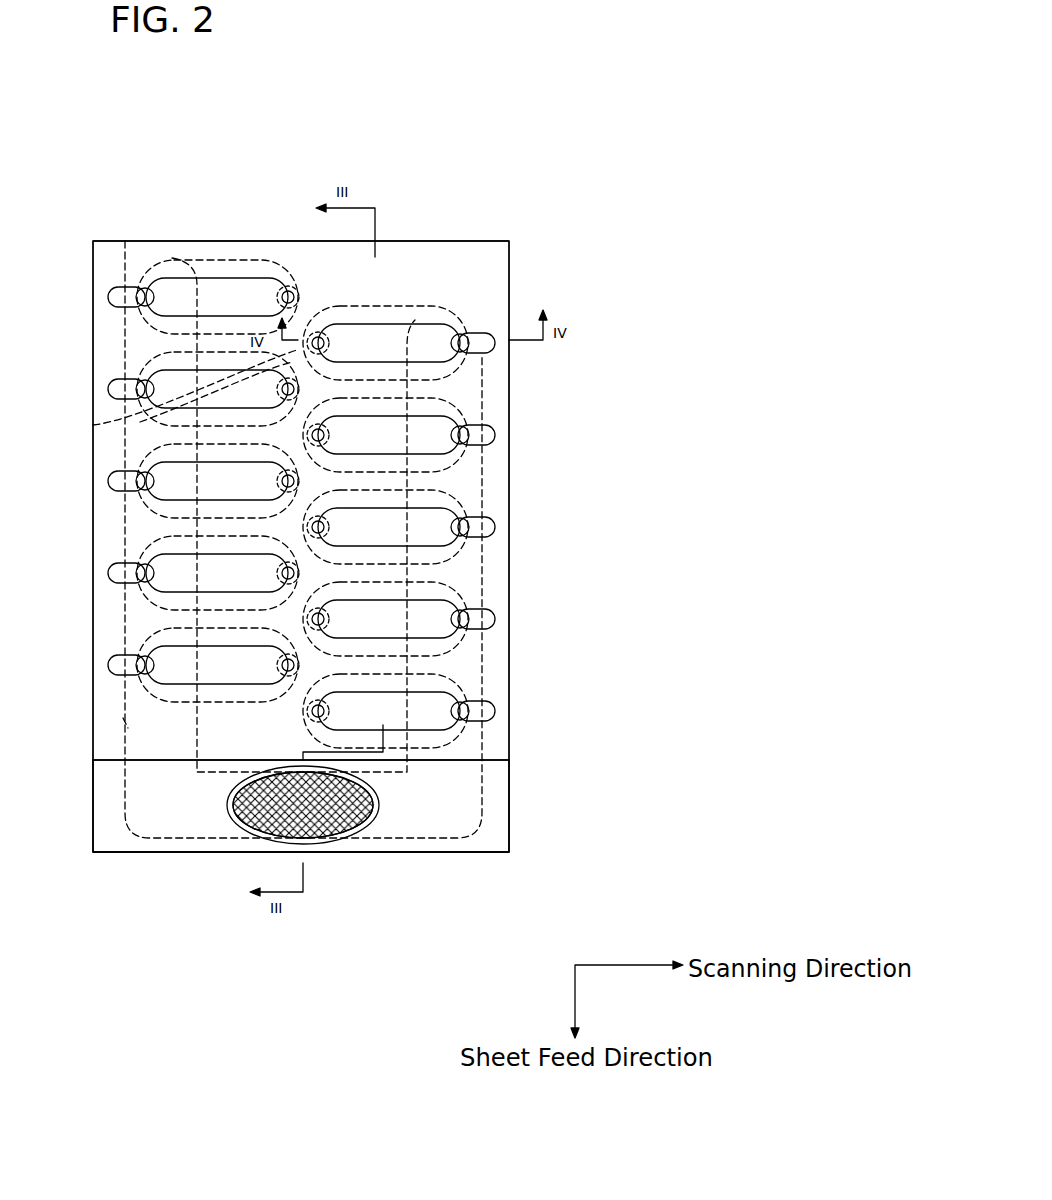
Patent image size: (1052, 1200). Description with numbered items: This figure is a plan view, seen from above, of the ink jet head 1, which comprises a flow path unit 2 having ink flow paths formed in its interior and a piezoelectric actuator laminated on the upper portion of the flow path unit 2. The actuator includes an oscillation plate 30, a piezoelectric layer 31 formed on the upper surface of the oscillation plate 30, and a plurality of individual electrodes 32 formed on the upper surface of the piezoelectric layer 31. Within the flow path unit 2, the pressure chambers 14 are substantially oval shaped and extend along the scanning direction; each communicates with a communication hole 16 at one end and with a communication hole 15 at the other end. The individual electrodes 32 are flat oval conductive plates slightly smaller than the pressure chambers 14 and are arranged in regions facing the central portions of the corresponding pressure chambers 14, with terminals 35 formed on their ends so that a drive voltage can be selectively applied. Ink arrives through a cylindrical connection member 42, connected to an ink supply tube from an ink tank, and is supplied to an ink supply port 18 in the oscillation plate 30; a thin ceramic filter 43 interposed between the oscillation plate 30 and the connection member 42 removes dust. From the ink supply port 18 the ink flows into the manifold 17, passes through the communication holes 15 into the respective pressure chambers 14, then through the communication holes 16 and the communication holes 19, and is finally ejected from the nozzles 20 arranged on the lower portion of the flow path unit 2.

The ink jet head 1 is at (411, 192).
The flow path unit 2 is at (514, 413).
The pressure chamber 14 is at (165, 258).
The communication hole 15 is at (112, 297).
The communication hole 16 is at (240, 258).
The manifold 17 is at (110, 743).
The ink supply port 18 is at (353, 828).
The communication hole 19 is at (80, 425).
The nozzle 20 is at (307, 322).
The oscillation plate 30 is at (497, 800).
The piezoelectric layer 31 is at (497, 745).
The individual electrode 32 is at (205, 280).
The terminal 35 is at (115, 297).
The connection member 42 is at (380, 810).
The filter 43 is at (323, 827).